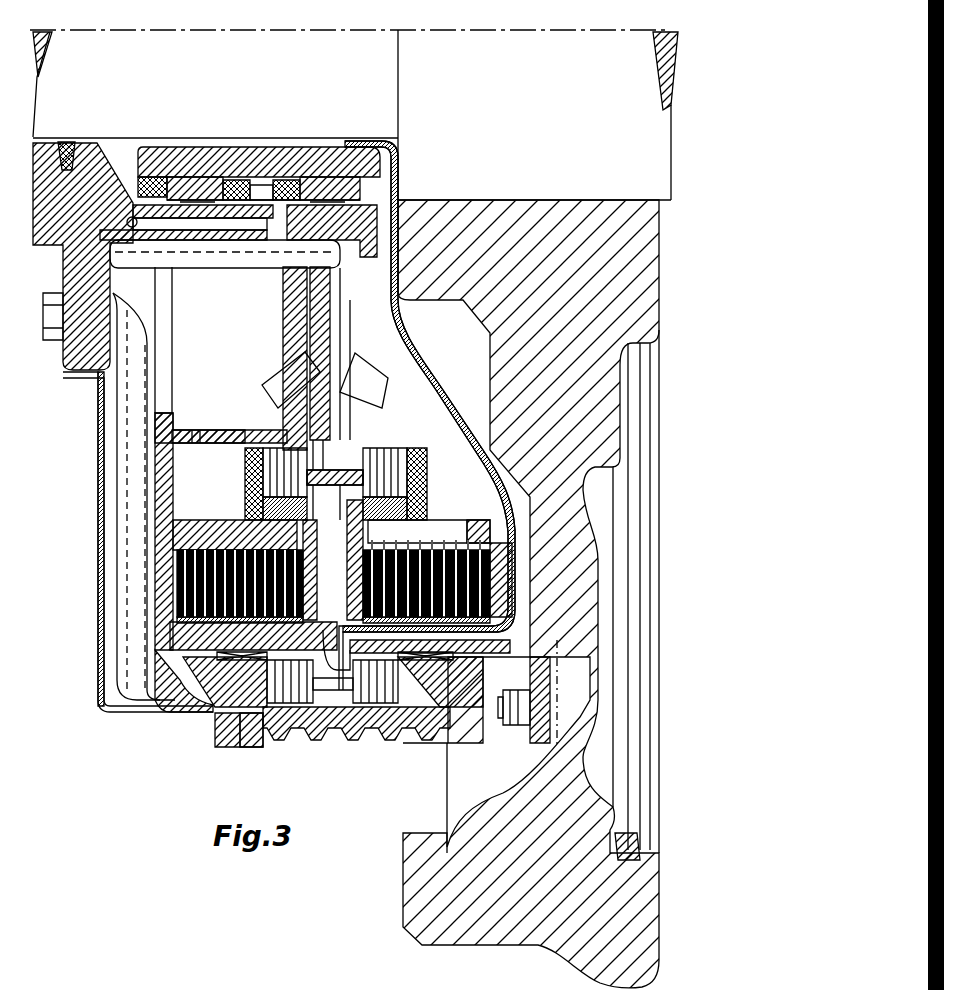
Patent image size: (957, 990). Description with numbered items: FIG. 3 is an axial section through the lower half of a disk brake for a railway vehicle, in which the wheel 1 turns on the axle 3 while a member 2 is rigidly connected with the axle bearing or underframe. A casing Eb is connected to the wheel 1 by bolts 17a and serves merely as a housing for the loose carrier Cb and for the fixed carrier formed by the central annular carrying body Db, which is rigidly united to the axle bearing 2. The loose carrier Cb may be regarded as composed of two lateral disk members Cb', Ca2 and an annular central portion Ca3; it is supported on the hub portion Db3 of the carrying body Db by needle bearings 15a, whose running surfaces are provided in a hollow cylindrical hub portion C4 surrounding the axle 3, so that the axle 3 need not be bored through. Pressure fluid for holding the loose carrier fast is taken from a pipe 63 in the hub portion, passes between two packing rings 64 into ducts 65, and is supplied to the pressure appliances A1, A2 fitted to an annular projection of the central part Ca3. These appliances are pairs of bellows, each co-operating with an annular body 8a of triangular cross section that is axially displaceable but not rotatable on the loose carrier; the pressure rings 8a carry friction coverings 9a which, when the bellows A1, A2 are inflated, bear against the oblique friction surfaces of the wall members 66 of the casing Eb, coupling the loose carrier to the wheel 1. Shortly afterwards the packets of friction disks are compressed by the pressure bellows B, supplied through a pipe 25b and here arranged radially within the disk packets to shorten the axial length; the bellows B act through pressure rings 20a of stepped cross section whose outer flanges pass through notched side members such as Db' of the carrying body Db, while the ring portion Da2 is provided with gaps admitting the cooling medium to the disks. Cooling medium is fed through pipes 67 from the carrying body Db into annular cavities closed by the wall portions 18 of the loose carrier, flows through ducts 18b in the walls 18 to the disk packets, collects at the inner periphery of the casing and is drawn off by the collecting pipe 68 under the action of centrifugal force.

The axle 3 is at (528, 88).
The wheel 1 is at (503, 797).
The axle bearing member 2 is at (66, 342).
The bolts 17a is at (500, 713).
The hollow cylindrical hub portion C4 is at (163, 150).
The needle bearings 15a is at (192, 175).
The packing rings 64 is at (233, 178).
The drum wall Db3 is at (280, 200).
The ducts 65 is at (385, 145).
The pipe 63 is at (208, 222).
The carrying body Db is at (225, 345).
The cylinder wall 25b is at (328, 322).
The pipes 67 is at (275, 385).
The clutch housing Cb' is at (148, 531).
The wall portions 18 is at (180, 430).
The ducts 18b is at (194, 430).
The pressure bellows B is at (262, 445).
The pressure rings 20a is at (245, 462).
The side member of carrying body Db' is at (245, 550).
The ring portion Da2 is at (425, 535).
The lateral disk member Ca2 is at (495, 580).
The cover Eb is at (100, 715).
The collecting pipe 68 is at (120, 622).
The clutch member Cb is at (321, 695).
The wall members 66 is at (185, 662).
The annular friction coverings 9a is at (212, 745).
The annular body 8a is at (250, 748).
The pressure appliance A1 is at (290, 680).
The pressure appliance A2 is at (380, 680).
The annular central portion Ca3 is at (332, 732).